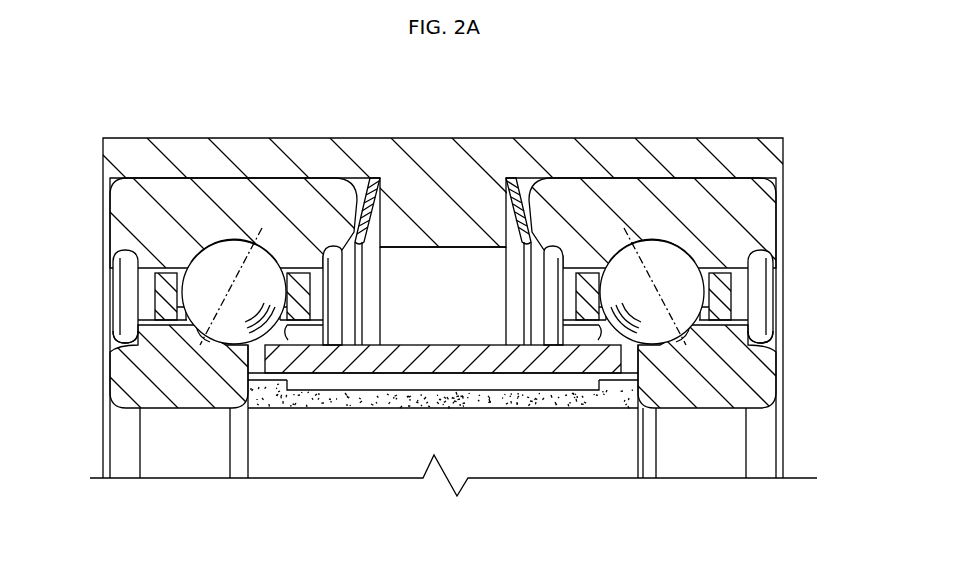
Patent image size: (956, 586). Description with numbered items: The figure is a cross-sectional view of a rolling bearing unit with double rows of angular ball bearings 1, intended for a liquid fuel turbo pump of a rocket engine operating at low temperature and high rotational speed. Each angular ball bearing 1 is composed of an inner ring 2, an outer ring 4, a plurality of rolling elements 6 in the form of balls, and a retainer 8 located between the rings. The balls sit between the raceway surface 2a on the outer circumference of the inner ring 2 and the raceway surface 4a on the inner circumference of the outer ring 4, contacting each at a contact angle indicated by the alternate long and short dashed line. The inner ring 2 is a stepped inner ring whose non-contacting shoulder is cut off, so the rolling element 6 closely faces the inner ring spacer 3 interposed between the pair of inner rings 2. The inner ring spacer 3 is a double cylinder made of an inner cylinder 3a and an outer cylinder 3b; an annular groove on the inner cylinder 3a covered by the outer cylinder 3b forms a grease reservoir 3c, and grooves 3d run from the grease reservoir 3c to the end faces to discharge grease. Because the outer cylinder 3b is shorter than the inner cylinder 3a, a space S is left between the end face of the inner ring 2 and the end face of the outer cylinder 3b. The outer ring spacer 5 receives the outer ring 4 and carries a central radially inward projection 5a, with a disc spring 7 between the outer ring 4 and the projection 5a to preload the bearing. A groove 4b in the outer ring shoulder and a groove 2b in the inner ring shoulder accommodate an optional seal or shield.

The angular ball bearing 1 is at (94, 201).
The inner ring 2 is at (133, 376).
The raceway surface 2a is at (200, 335).
The groove 2b is at (120, 329).
The inner ring spacer 3 is at (560, 531).
The inner cylinder 3a is at (498, 396).
The outer cylinder 3b is at (543, 382).
The grease reservoir 3c is at (357, 380).
The grooves 3d is at (250, 378).
The outer ring 4 is at (130, 223).
The raceway surface 4a is at (262, 230).
The groove 4b is at (118, 259).
The outer ring spacer 5 is at (419, 150).
The projection 5a is at (453, 224).
The rolling elements 6 is at (214, 262).
The disc spring 7 is at (359, 186).
The retainer 8 is at (163, 293).
The space S is at (271, 382).